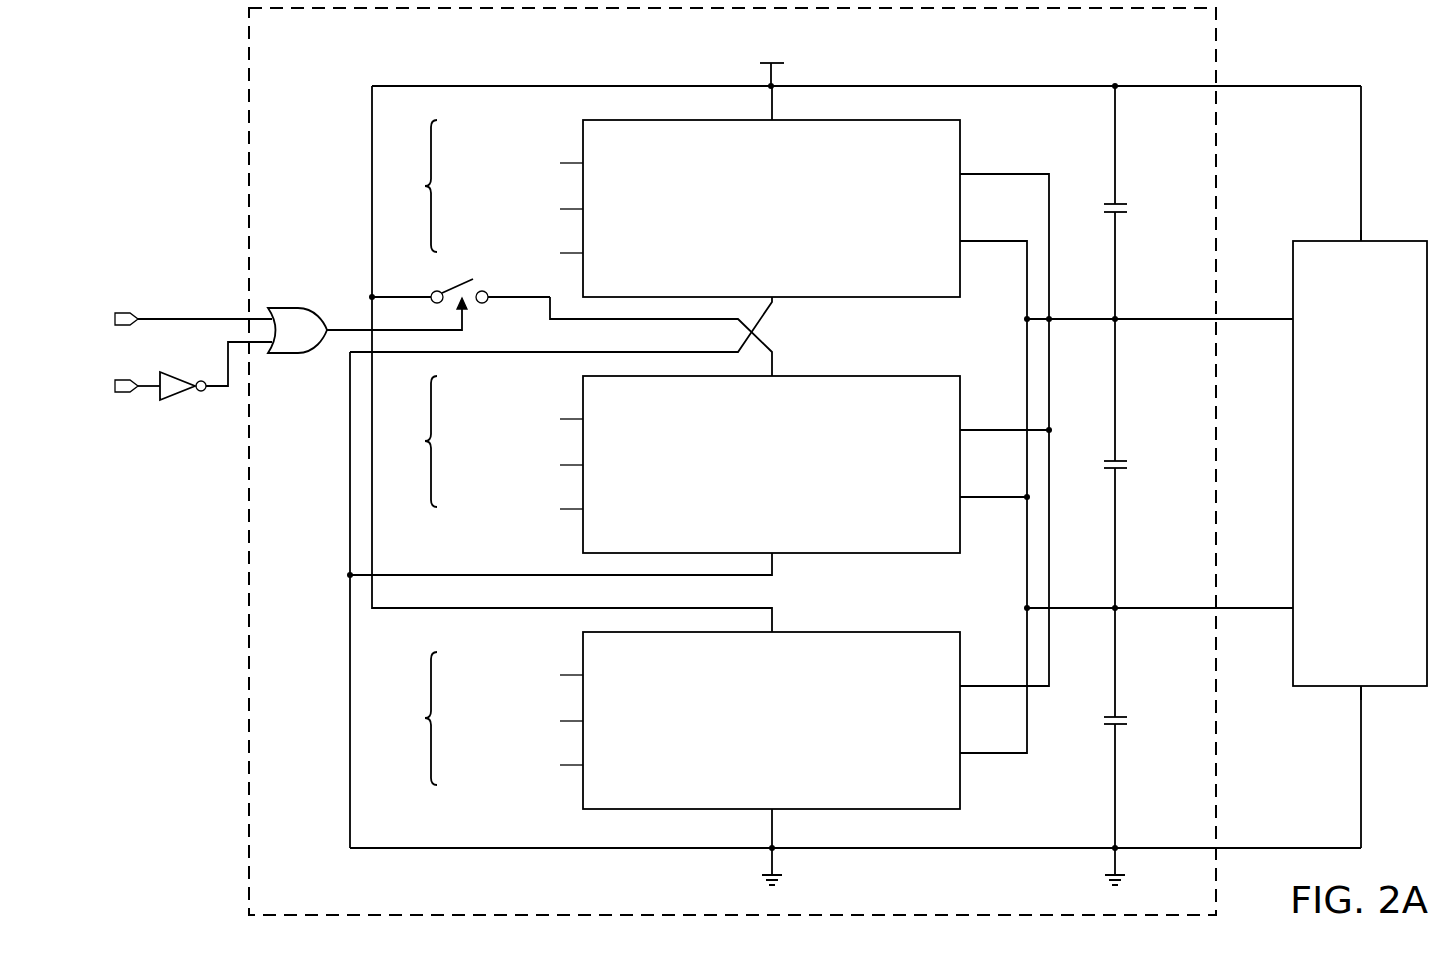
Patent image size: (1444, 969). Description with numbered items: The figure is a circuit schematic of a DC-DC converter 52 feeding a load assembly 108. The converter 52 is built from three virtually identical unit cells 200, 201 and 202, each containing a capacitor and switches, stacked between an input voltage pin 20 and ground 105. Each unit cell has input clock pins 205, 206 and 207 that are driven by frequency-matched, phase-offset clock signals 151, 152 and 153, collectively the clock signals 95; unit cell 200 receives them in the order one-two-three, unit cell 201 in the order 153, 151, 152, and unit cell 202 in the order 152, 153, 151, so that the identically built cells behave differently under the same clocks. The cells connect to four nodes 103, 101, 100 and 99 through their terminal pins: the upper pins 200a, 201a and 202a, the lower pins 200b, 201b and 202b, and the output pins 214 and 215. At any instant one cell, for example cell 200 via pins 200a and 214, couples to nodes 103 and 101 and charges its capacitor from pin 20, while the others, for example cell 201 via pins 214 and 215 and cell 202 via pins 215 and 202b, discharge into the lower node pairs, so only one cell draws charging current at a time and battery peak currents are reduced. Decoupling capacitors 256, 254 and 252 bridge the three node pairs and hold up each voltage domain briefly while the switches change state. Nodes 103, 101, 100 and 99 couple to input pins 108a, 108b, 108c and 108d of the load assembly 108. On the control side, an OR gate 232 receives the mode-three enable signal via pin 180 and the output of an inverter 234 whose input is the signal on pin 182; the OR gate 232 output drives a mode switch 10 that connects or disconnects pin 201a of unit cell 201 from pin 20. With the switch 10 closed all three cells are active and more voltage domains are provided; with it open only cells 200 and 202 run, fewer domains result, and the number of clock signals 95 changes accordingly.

The DC-DC converter 52 is at (244, 142).
The enable signal pin 180 is at (123, 312).
The enable signal pin 182 is at (123, 393).
The inverter 234 is at (178, 398).
The OR gate 232 is at (300, 308).
The mode switch 10 is at (450, 289).
The input voltage pin 20 is at (765, 76).
The unit cell 200 is at (794, 222).
The unit cell 201 is at (771, 464).
The unit cell 202 is at (771, 720).
The input clock pin 205 is at (646, 162).
The input clock pin 206 is at (646, 208).
The input clock pin 207 is at (646, 252).
The clock signal 151 is at (519, 153).
The clock signal 152 is at (519, 199).
The clock signal 153 is at (519, 243).
The clock signals 95 is at (413, 452).
The output pin 200a is at (778, 115).
The pin 200b is at (778, 300).
The pin 201a is at (778, 368).
The pin 201b is at (778, 560).
The pin 202a is at (778, 622).
The output pin 202b is at (778, 814).
The output pin 214 is at (967, 166).
The output pin 215 is at (965, 247).
The node 103 is at (1122, 90).
The node 101 is at (1122, 325).
The node 100 is at (1122, 612).
The node 99 is at (1122, 843).
The decoupling capacitor 256 is at (1130, 211).
The decoupling capacitor 254 is at (1130, 467).
The decoupling capacitor 252 is at (1130, 720).
The ground 105 is at (765, 880).
The load assembly 108 is at (1338, 509).
The input pin 108a is at (1365, 238).
The input pin 108b is at (1290, 316).
The input pin 108c is at (1290, 615).
The input pin 108d is at (1365, 692).